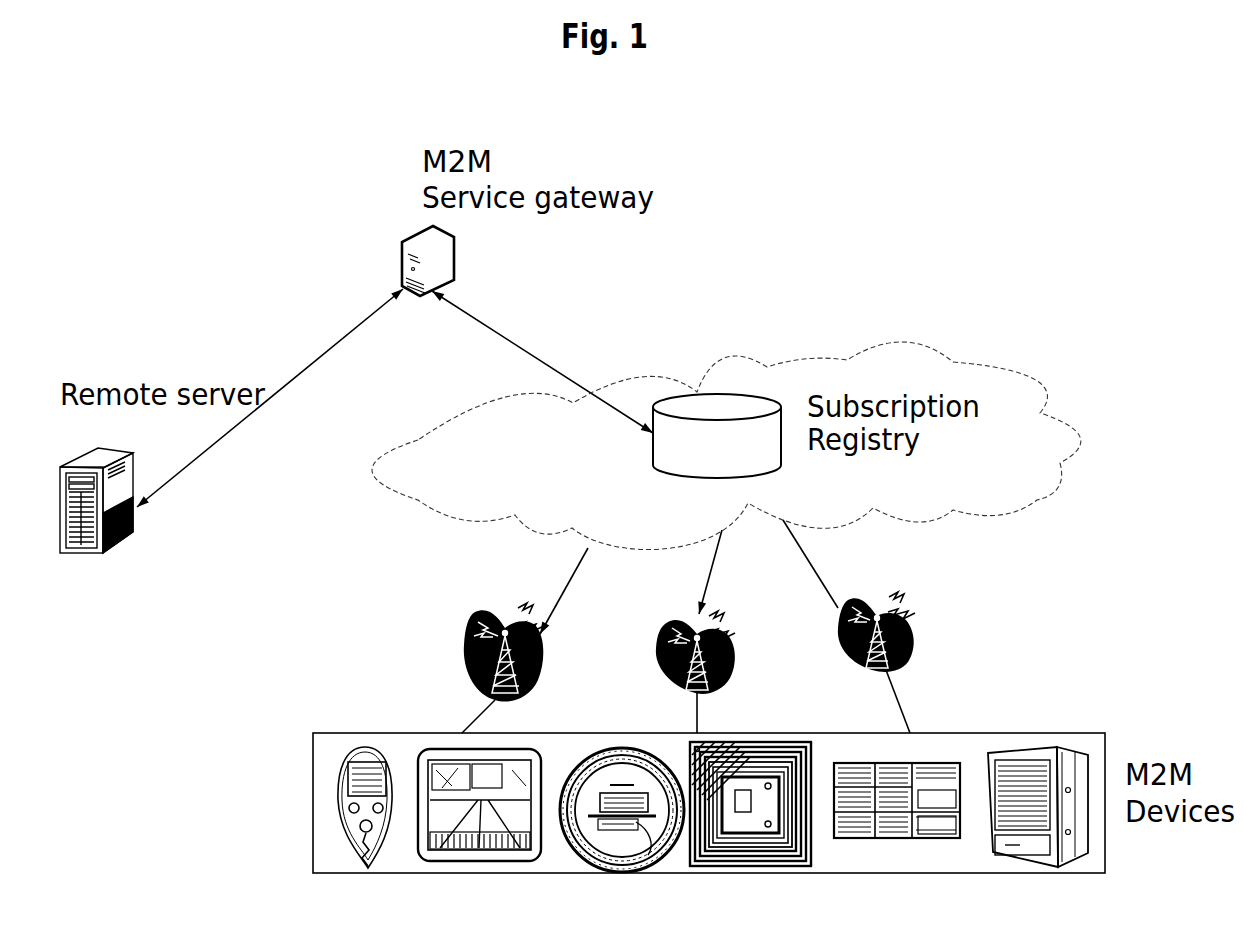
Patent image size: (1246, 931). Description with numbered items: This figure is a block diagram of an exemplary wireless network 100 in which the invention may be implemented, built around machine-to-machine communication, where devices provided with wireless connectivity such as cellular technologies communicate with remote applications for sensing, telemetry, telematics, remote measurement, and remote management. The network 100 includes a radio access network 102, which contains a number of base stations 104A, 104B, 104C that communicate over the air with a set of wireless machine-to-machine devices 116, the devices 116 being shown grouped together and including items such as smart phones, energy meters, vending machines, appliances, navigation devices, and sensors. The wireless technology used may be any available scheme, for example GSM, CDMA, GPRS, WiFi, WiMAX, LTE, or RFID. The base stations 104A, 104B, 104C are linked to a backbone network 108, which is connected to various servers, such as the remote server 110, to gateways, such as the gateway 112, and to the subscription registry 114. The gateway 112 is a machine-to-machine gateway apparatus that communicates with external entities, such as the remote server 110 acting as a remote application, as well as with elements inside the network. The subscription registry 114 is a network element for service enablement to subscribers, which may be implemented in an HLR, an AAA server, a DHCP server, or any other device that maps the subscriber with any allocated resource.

The wireless network 100 is at (165, 826).
The radio access network 102 is at (330, 621).
The base station 104A is at (475, 608).
The base station 104B is at (670, 618).
The base station 104C is at (917, 625).
The backbone network 108 is at (912, 343).
The remote server 110 is at (117, 547).
The gateway 112 is at (413, 232).
The subscription registry 114 is at (703, 390).
The devices 116 is at (283, 813).